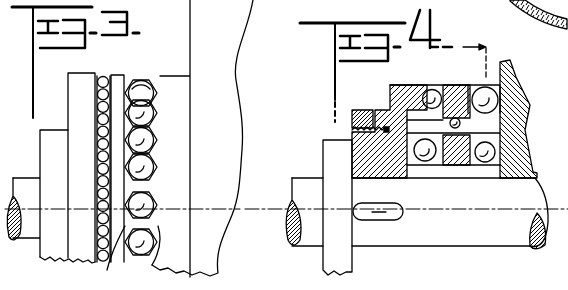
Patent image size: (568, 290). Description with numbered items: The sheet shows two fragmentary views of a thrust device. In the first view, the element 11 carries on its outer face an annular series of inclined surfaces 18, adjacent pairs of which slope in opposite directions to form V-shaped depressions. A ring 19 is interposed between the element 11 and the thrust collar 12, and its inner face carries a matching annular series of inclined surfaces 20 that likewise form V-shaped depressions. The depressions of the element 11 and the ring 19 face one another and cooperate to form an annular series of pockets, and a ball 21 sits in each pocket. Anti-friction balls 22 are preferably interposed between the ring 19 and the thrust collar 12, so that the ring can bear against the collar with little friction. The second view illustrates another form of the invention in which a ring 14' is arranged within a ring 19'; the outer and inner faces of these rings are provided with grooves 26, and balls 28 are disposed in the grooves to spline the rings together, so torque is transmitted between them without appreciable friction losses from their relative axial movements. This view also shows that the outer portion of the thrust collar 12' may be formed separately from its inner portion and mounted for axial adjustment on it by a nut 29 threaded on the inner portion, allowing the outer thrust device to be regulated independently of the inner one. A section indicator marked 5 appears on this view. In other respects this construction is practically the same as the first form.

In FIG. 3, the element 11 is at (194, 44).
In FIG. 3, the thrust collar 12 is at (67, 168).
In FIG. 3, the anti-friction balls 22 is at (104, 123).
In FIG. 3, the ring 19 is at (115, 156).
In FIG. 3, the ball 21 is at (136, 86).
In FIG. 4, the ball 21 is at (454, 111).
In FIG. 3, the inclined surfaces 18 is at (156, 198).
In FIG. 3, the inclined surfaces 20 is at (129, 258).
In FIG. 4, the thrust collar 12' is at (324, 198).
In FIG. 4, the nut 29 is at (362, 110).
In FIG. 4, the ring 14' is at (458, 144).
In FIG. 4, the ring 19' is at (443, 84).
In FIG. 4, the grooves 26 is at (464, 125).
In FIG. 4, the balls 28 is at (502, 107).
In FIG. 4, the section line 5 is at (482, 60).